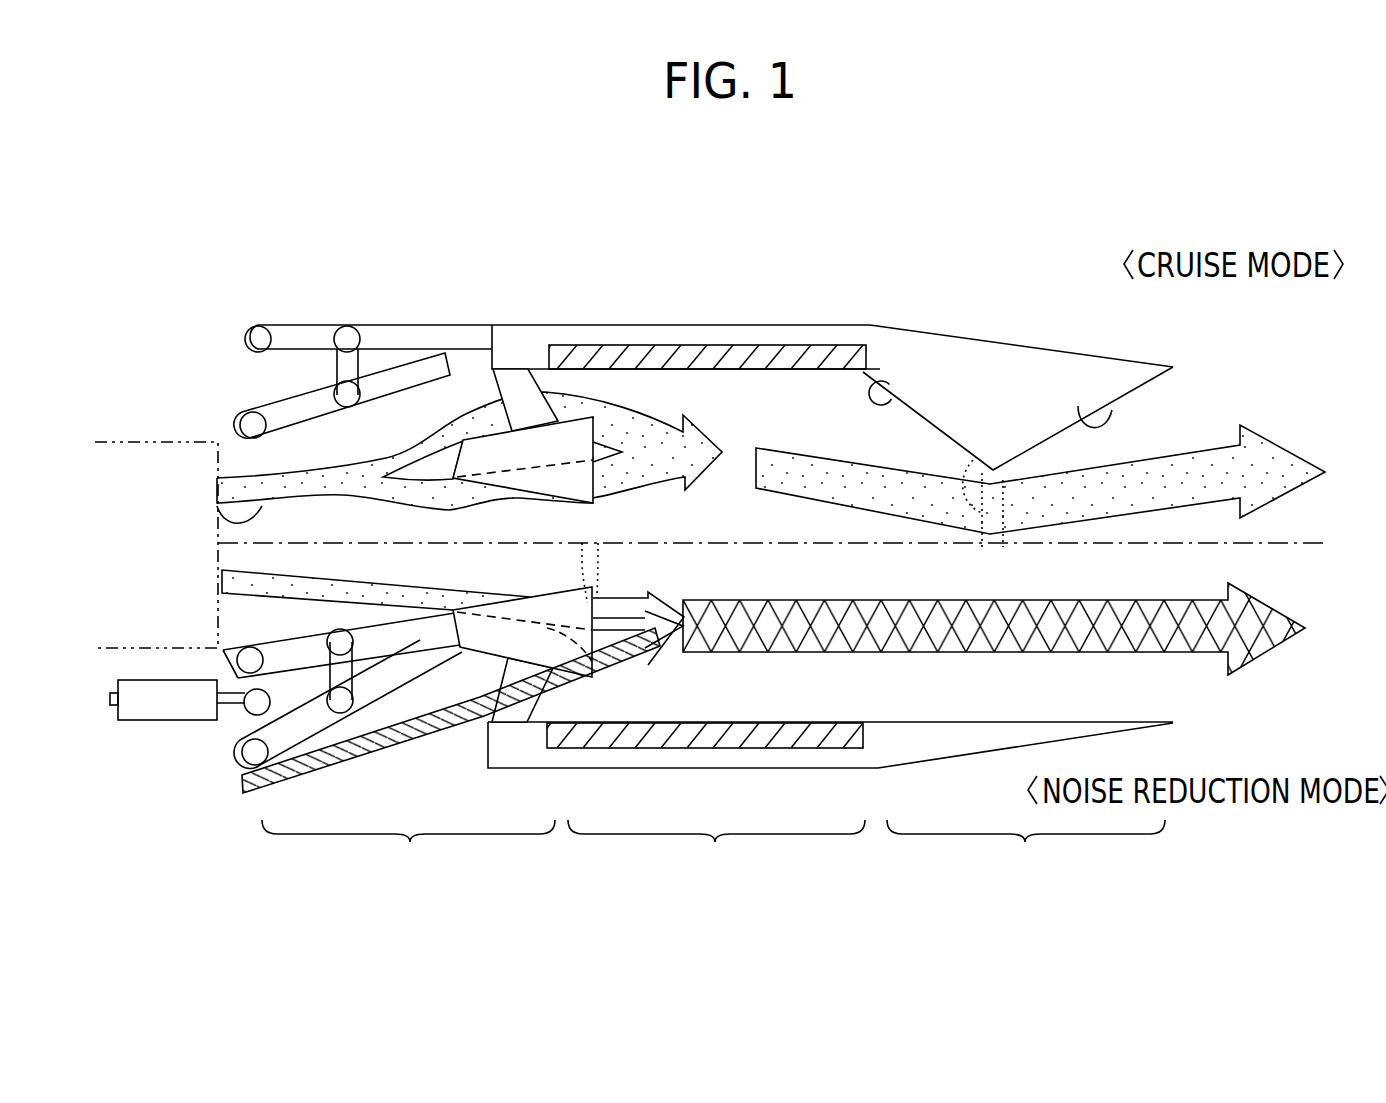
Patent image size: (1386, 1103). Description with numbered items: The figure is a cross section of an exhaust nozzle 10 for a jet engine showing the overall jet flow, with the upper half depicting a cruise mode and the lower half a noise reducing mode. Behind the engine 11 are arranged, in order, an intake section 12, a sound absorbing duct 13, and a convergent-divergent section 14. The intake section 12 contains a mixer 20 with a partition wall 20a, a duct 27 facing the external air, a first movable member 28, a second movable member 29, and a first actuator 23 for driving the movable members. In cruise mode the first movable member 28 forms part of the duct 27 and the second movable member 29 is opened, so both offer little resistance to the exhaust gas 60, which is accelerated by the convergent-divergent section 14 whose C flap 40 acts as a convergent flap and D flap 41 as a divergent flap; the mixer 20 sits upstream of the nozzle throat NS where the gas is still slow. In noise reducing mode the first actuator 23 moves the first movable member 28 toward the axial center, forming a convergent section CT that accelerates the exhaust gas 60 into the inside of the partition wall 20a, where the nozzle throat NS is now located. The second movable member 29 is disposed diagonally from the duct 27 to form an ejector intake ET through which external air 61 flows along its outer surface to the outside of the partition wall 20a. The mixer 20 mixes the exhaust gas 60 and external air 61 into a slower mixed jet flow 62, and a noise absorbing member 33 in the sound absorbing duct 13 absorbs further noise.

The exhaust nozzle 10 is at (922, 266).
The engine 11 is at (152, 440).
The intake section 12 is at (408, 853).
The sound absorbing duct 13 is at (716, 853).
The convergent-divergent section 14 is at (1026, 853).
The mixer 20 is at (595, 503).
The partition wall 20a is at (598, 655).
The first actuator 23 is at (157, 722).
The duct 27 is at (508, 322).
The first movable member 28 is at (290, 323).
The second movable member 29 is at (383, 362).
The noise absorbing member 33 is at (815, 720).
The C flap 40 is at (883, 382).
The D flap 41 is at (1090, 412).
The exhaust gas 60 is at (270, 572).
The external air 61 is at (283, 782).
The mixed jet flow 62 is at (926, 654).
The convergent section CT is at (887, 430).
The nozzle throat NS is at (975, 455).
The ejector intake ET is at (458, 675).